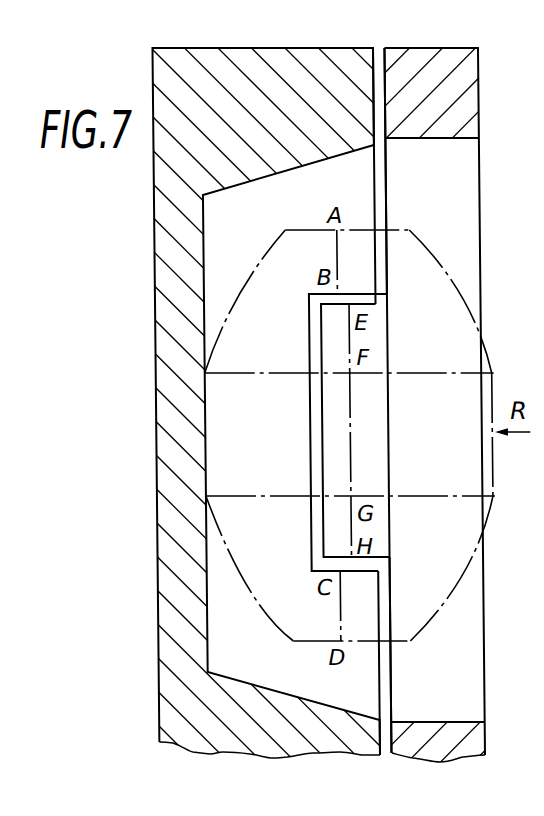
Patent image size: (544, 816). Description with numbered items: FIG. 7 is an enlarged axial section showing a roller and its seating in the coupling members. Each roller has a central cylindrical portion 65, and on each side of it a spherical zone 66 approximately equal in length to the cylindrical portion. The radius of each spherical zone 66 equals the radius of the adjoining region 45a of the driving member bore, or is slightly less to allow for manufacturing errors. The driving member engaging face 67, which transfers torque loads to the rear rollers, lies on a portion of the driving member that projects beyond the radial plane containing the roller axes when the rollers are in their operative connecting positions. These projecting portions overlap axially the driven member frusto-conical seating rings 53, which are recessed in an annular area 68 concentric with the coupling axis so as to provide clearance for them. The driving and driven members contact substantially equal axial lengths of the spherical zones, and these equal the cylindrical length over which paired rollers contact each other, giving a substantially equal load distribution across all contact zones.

The adjoining region of the driving member bore 45a is at (426, 138).
The frusto-conical seating ring 53 is at (153, 404).
The central cylindrical portion 65 is at (488, 478).
The spherical zone 66 is at (459, 290).
The driving member engaging face 67 is at (332, 409).
The annular area 68 is at (294, 542).